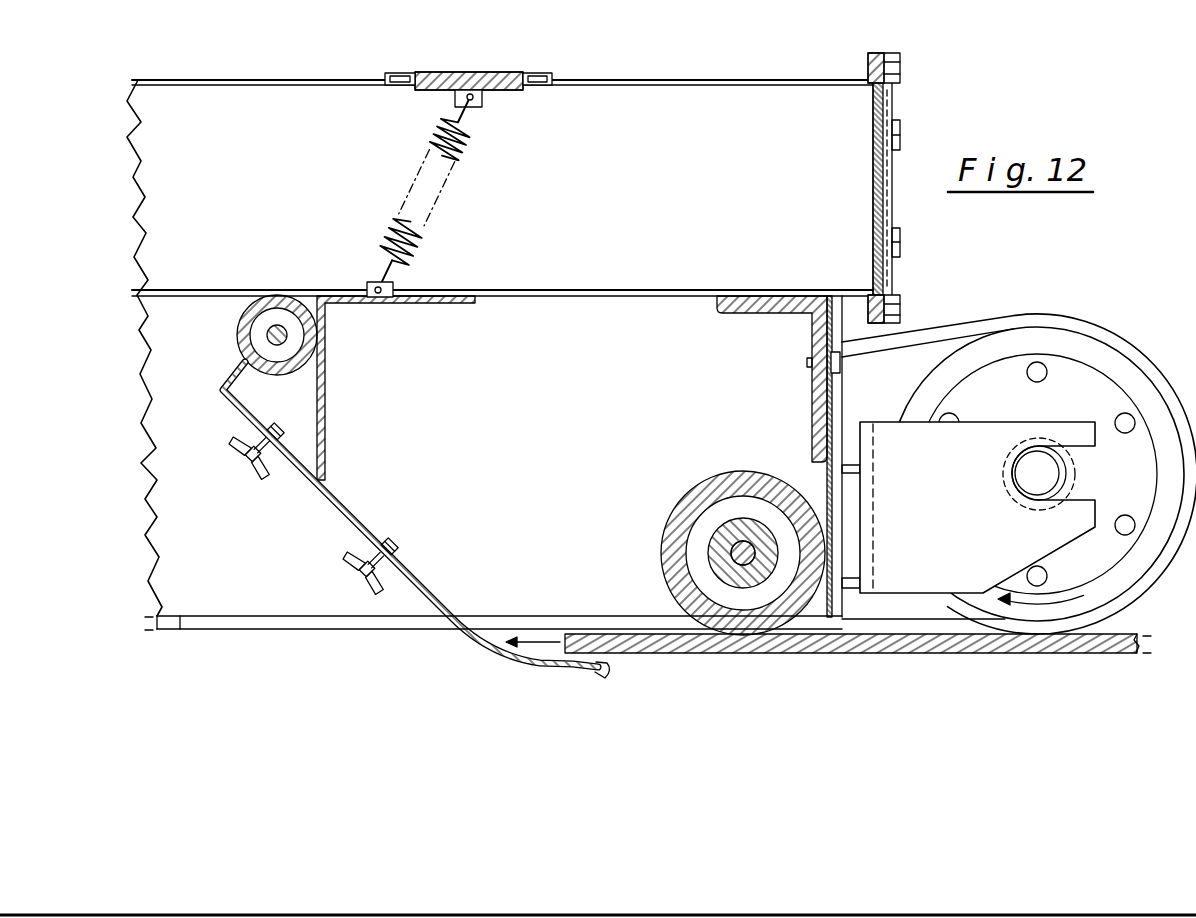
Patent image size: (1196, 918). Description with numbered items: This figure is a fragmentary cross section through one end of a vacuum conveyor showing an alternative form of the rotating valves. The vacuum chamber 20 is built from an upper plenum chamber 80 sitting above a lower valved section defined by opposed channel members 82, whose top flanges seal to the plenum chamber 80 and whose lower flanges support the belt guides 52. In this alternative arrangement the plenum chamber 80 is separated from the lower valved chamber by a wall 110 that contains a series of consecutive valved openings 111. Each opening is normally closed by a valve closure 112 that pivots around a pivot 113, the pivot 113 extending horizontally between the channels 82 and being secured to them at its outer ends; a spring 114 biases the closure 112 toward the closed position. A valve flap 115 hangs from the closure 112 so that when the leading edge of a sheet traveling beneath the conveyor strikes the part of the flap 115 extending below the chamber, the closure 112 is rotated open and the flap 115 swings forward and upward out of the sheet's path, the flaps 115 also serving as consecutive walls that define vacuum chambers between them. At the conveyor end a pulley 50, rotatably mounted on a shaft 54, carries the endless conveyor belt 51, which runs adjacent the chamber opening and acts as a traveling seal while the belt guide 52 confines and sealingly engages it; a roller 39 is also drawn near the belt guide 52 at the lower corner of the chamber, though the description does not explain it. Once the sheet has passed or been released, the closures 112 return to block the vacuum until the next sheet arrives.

The vacuum chamber 20 is at (721, 76).
The upper plenum chamber 80 is at (650, 184).
The channel members 82 is at (569, 424).
The wall 110 is at (267, 292).
The valved openings 111 is at (440, 290).
The valve closures 112 is at (429, 303).
The pivot 113 is at (272, 331).
The springs 114 is at (418, 248).
The valve flaps 115 is at (548, 661).
The pulleys 50 is at (1047, 342).
The conveyor belts 51 is at (946, 331).
The belt guides 52 is at (835, 624).
The support roller 39 is at (761, 627).
The shaft 54 is at (1053, 478).